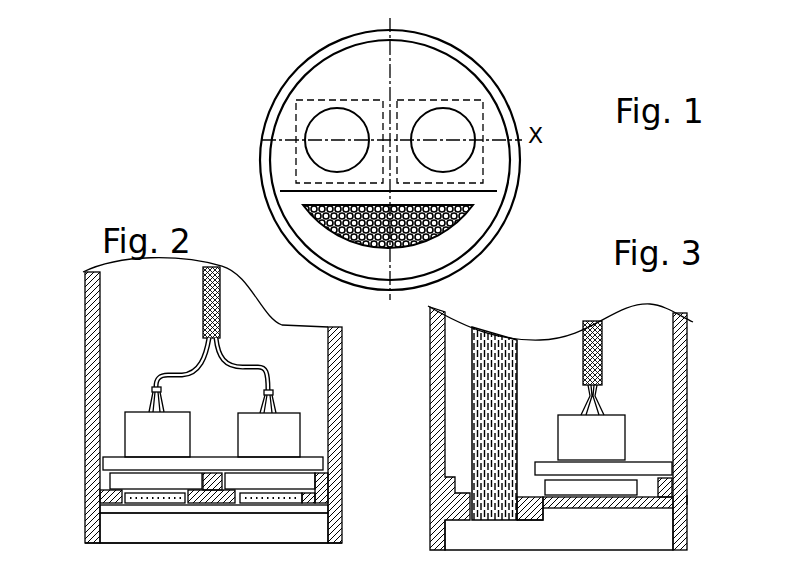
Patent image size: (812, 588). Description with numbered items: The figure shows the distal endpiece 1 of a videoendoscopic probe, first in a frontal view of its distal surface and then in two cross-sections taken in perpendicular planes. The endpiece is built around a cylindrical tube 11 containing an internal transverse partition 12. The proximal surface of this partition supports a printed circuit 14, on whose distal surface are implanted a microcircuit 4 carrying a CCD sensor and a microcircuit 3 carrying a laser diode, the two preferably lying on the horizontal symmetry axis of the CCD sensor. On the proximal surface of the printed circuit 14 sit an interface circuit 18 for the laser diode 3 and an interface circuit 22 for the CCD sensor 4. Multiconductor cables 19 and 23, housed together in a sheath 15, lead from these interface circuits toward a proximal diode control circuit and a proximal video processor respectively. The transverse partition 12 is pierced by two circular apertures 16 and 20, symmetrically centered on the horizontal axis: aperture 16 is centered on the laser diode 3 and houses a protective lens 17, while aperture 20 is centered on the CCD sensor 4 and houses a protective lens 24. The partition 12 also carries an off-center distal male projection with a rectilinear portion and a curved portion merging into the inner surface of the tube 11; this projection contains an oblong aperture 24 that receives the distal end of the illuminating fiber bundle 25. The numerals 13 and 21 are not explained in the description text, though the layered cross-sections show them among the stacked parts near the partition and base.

In FIG. 1, the distal endpiece 1 is at (292, 60).
In FIG. 2, the distal endpiece 1 is at (80, 258).
In FIG. 3, the distal endpiece 1 is at (700, 302).
In FIG. 1, the microcircuit supporting a laser diode 3 is at (295, 165).
In FIG. 2, the microcircuit supporting a laser diode 3 is at (120, 480).
In FIG. 1, the microcircuit supporting a CCD sensor 4 is at (480, 155).
In FIG. 2, the microcircuit supporting a CCD sensor 4 is at (300, 468).
In FIG. 3, the microcircuit supporting a CCD sensor 4 is at (610, 490).
In FIG. 1, the cylindrical tube 11 is at (487, 225).
In FIG. 3, the cylindrical tube 11 is at (687, 500).
In FIG. 1, the internal transverse partition 12 is at (468, 124).
In FIG. 2, the internal transverse partition 12 is at (207, 504).
In FIG. 3, the internal transverse partition 12 is at (650, 508).
In FIG. 1, the housing bottom part 13 is at (317, 240).
In FIG. 2, the housing bottom part 13 is at (240, 507).
In FIG. 3, the housing bottom part 13 is at (453, 523).
In FIG. 2, the printed circuit 14 is at (213, 456).
In FIG. 3, the printed circuit 14 is at (672, 468).
In FIG. 2, the sheath 15 is at (203, 303).
In FIG. 1, the circular aperture 16 is at (308, 124).
In FIG. 2, the circular aperture 16 is at (186, 504).
In FIG. 1, the protective lens 17 is at (298, 132).
In FIG. 2, the protective lens 17 is at (118, 503).
In FIG. 2, the interface circuit of the laser diode 18 is at (167, 423).
In FIG. 2, the multiconductor cable 19 is at (188, 350).
In FIG. 1, the circular aperture 20 is at (430, 76).
In FIG. 2, the circular aperture 20 is at (309, 509).
In FIG. 1, the second sensing element outline / layer 21 is at (445, 101).
In FIG. 2, the second sensing element outline / layer 21 is at (273, 504).
In FIG. 2, the interface circuit of the CCD sensor 22 is at (283, 423).
In FIG. 2, the multiconductor cable 23 is at (237, 355).
In FIG. 1, the protective lens / oblong aperture 24 is at (437, 241).
In FIG. 3, the protective lens / oblong aperture 24 is at (518, 520).
In FIG. 1, the illuminating fiber bundle 25 is at (447, 231).
In FIG. 3, the illuminating fiber bundle 25 is at (498, 337).